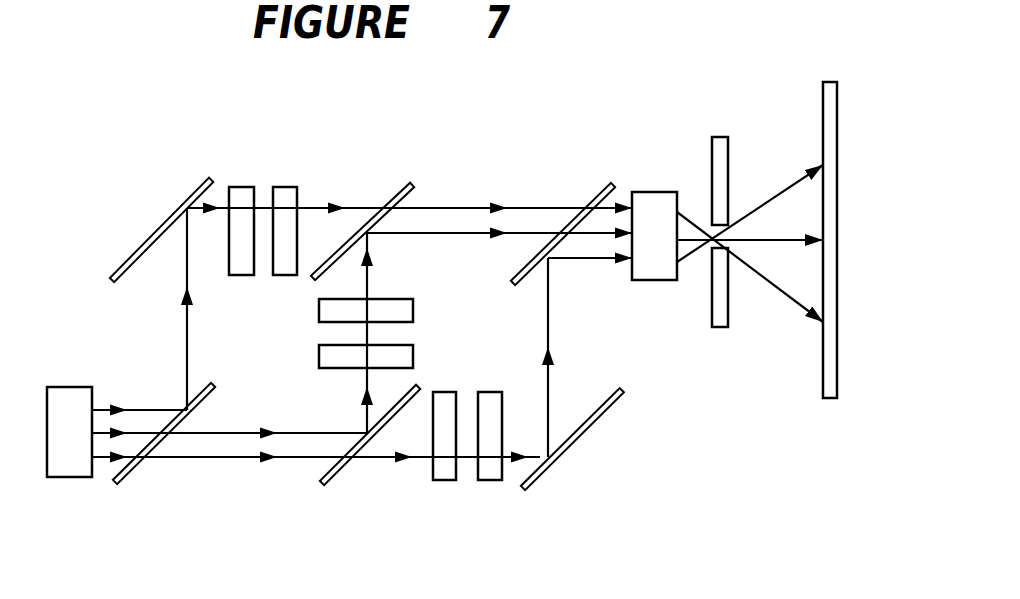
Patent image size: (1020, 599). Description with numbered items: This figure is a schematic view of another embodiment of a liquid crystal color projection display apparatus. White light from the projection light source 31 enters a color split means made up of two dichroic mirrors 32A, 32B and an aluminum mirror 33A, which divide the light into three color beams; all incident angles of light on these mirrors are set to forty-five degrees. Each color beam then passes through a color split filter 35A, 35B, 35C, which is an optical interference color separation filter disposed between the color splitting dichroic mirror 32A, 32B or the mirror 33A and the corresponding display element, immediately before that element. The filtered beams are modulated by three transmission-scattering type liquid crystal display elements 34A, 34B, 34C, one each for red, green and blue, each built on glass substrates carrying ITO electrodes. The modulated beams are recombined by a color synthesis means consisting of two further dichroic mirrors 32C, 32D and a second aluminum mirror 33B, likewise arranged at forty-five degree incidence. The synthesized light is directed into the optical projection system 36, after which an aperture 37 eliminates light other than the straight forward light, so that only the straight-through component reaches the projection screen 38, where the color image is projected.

The projection light source 31 is at (62, 477).
The dichroic mirror 32A is at (208, 395).
The dichroic mirror 32B is at (345, 466).
The dichroic mirror 32C is at (392, 204).
The dichroic mirror 32D is at (588, 204).
The mirror 33A is at (163, 225).
The mirror 33B is at (585, 432).
The transmission-scattering type liquid crystal display element 34A is at (287, 187).
The transmission-scattering type liquid crystal display element 34B is at (413, 312).
The transmission-scattering type liquid crystal display element 34C is at (490, 480).
The color split filter 35A is at (243, 187).
The color split filter 35B is at (413, 359).
The color split filter 35C is at (444, 480).
The optical projection system 36 is at (653, 280).
The aperture 37 is at (717, 137).
The projection screen 38 is at (820, 393).